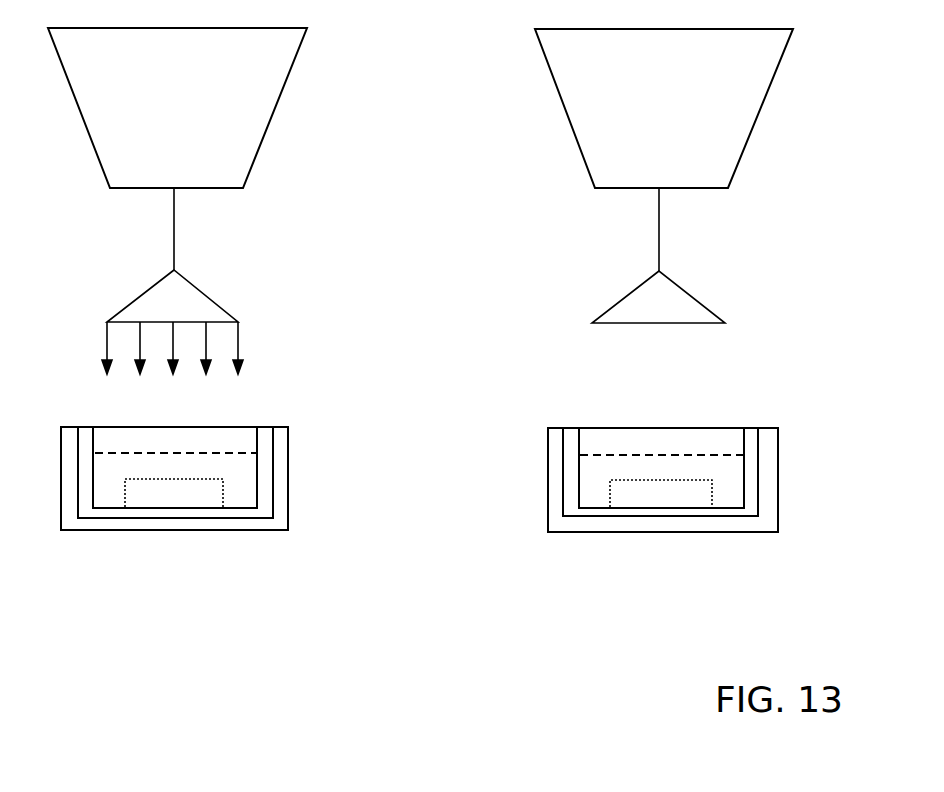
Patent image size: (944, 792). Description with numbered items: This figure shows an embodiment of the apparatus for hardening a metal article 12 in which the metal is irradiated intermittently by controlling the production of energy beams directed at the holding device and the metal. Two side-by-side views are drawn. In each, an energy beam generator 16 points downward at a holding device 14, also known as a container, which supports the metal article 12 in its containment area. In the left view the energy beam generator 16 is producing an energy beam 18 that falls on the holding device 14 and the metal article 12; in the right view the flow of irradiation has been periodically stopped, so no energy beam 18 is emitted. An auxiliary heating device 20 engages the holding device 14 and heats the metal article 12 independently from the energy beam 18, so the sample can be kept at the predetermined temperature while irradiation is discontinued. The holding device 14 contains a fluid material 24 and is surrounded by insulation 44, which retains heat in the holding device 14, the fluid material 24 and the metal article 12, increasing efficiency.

The metal article 12 is at (614, 493).
The holding device 14 is at (252, 508).
The energy beam generator 16 is at (567, 110).
The energy beam 18 is at (238, 322).
The auxiliary heating device 20 is at (570, 515).
The fluid material 24 is at (208, 450).
The insulation 44 is at (173, 530).